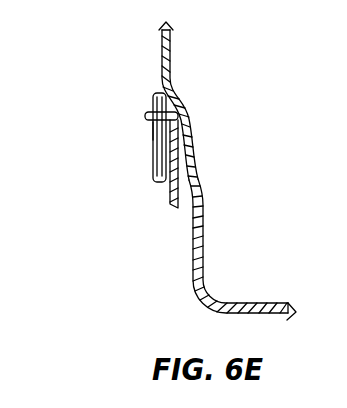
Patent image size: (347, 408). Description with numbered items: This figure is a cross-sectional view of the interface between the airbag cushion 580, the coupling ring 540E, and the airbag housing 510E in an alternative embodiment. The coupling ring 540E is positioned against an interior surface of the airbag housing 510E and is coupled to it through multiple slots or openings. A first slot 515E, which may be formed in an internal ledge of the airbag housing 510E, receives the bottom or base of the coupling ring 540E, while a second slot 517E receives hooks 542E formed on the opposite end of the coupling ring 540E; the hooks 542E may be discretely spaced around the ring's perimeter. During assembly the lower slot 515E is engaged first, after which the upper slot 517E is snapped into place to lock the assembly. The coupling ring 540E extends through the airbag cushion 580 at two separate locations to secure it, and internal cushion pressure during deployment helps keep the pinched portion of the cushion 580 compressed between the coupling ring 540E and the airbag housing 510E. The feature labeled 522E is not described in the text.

The airbag housing 510E is at (206, 283).
The airbag cushion 580 is at (172, 35).
The hooks 542E is at (146, 111).
The second slot 517E is at (143, 126).
The clip inner wall 522E is at (157, 155).
The first slot 515E is at (165, 193).
The coupling ring 540E is at (172, 209).